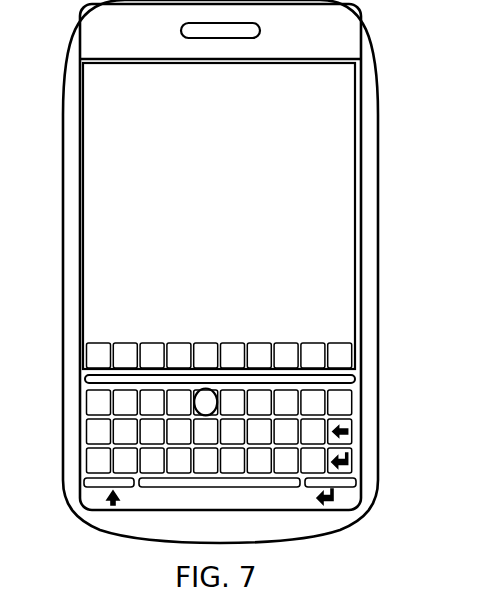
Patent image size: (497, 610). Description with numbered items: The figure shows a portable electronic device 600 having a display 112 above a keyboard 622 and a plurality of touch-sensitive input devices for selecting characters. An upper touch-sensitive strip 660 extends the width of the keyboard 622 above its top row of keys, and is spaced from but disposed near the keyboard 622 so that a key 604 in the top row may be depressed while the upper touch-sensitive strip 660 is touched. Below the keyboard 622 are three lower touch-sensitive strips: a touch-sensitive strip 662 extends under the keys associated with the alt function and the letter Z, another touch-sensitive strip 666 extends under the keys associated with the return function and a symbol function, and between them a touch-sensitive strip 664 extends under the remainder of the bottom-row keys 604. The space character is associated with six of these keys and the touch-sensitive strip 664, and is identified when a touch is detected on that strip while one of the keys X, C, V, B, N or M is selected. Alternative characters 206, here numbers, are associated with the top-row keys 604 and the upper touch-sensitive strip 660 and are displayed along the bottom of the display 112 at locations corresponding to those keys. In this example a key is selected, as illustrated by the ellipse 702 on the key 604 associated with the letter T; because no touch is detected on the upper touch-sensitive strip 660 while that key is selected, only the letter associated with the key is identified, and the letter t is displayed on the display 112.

The portable electronic device 600 is at (148, 564).
The display 112 is at (351, 108).
The characters 206 is at (340, 343).
The upper touch-sensitive strip 660 is at (355, 380).
The key 604 is at (353, 407).
The keyboard 622 is at (350, 460).
The ellipse 702 is at (197, 413).
The touch-sensitive strip 662 is at (84, 489).
The touch-sensitive strip 664 is at (276, 486).
The touch-sensitive strip 666 is at (356, 484).